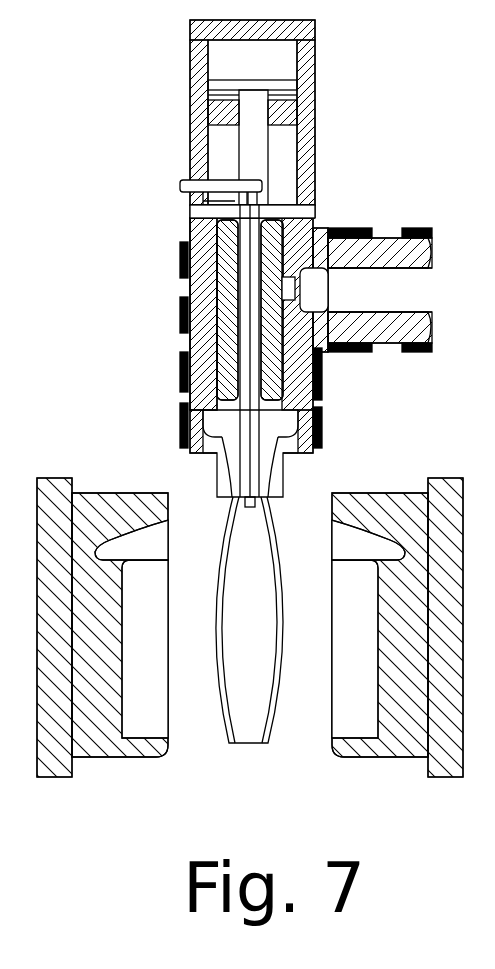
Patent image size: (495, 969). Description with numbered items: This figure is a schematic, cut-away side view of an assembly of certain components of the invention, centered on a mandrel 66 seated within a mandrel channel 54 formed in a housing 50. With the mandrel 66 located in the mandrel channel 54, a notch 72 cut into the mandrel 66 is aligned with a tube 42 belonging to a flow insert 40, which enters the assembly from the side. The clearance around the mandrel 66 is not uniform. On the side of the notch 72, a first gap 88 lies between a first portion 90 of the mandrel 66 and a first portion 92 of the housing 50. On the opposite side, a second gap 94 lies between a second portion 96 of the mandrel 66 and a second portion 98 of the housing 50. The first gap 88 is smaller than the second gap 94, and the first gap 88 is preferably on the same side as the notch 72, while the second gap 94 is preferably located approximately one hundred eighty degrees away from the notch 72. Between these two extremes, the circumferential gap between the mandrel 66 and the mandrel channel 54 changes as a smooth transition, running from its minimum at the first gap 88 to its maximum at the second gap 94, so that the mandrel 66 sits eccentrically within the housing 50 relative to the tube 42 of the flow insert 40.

The mandrel 66 is at (220, 233).
The second portion of the mandrel 96 is at (218, 253).
The second portion of the housing 98 is at (200, 287).
The housing 50 is at (187, 343).
The second gap 94 is at (220, 358).
The mandrel channel 54 is at (223, 385).
The first portion of the mandrel 90 is at (276, 233).
The first portion of the housing 92 is at (290, 278).
The notch 72 is at (312, 240).
The tube 42 is at (300, 288).
The flow insert 40 is at (320, 347).
The first gap 88 is at (313, 397).